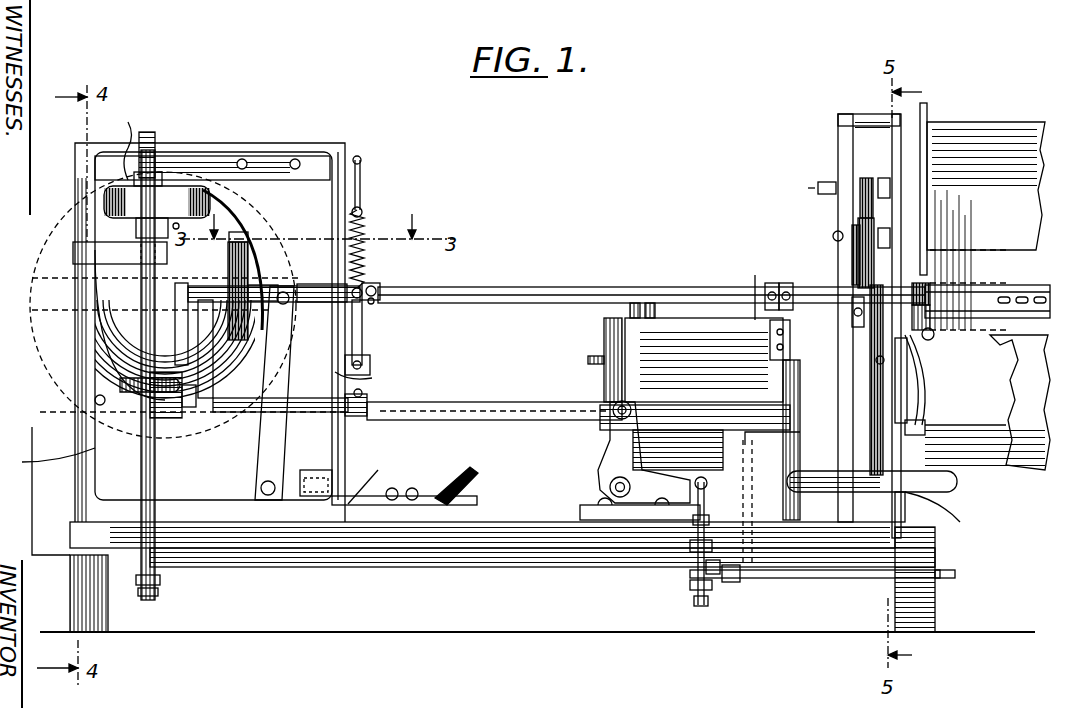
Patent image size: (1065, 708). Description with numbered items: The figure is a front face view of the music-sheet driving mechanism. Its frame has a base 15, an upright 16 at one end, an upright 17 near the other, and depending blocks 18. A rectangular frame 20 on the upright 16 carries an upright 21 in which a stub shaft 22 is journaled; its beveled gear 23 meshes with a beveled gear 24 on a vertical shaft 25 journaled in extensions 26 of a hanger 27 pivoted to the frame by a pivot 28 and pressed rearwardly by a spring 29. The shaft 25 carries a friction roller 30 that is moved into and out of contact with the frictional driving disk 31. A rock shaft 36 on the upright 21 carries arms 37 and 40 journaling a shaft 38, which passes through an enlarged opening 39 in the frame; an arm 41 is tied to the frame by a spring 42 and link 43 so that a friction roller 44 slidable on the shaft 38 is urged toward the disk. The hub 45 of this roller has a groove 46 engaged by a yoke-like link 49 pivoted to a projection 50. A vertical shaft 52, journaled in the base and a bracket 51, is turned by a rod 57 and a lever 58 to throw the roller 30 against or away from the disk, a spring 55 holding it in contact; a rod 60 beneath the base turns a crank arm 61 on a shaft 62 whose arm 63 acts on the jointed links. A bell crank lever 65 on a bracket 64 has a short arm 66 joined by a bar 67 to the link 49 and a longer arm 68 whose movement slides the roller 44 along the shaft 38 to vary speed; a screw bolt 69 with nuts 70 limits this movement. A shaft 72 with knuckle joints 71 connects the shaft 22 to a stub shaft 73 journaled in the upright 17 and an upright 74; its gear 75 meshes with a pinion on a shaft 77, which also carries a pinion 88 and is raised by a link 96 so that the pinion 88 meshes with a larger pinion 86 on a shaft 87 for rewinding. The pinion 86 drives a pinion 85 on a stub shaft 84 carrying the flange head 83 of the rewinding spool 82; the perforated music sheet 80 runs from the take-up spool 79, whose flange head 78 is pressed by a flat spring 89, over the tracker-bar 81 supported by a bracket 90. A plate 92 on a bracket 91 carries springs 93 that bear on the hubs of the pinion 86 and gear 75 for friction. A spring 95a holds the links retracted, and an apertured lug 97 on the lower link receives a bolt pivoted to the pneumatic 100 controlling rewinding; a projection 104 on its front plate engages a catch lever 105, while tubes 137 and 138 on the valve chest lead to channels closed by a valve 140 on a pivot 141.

The base 15 is at (505, 562).
The upright 16 is at (35, 395).
The upright 17 is at (836, 136).
The depending legs or blocks 18 is at (80, 555).
The rectangular frame 20 is at (310, 141).
The upright 21 is at (225, 425).
The stub shaft 22 is at (262, 430).
The beveled gear 23 is at (165, 425).
The beveled gear 24 is at (120, 385).
The vertical shaft 25 is at (120, 365).
The extensions 26 is at (67, 288).
The hanger 27 is at (100, 352).
The pivot 28 is at (96, 400).
The spring 29 is at (170, 156).
The friction roller 30 is at (203, 188).
The frictional driving disk 31 is at (230, 205).
The rock shaft 36 is at (372, 378).
The arm 37 is at (183, 283).
The shaft 38 is at (212, 286).
The enlarged opening 39 is at (366, 284).
The arm 40 is at (362, 320).
The arm 41 is at (370, 362).
The spring 42 is at (364, 212).
The link 43 is at (362, 176).
The friction roller 44 is at (250, 290).
The hub 45 is at (270, 288).
The groove 46 is at (305, 284).
The link 49 is at (290, 430).
The projection 50 is at (328, 476).
The bracket 51 is at (78, 252).
The shaft 52 is at (140, 295).
The spring 55 is at (155, 142).
The rod 57 is at (370, 480).
The lever 58 is at (438, 498).
The rod 60 is at (440, 562).
The crank arm 61 is at (735, 580).
The shaft 62 is at (752, 520).
The arm 63 is at (790, 520).
The bracket 64 is at (600, 515).
The bell crank lever 65 is at (606, 470).
The short arm 66 is at (612, 405).
The bar 67 is at (360, 440).
The longer arm 68 is at (960, 522).
The screw bolt 69 is at (680, 575).
The nuts 70 is at (706, 575).
The knuckle or ball joint 71 is at (372, 304).
The shaft 72 is at (400, 430).
The stub shaft 73 is at (925, 430).
The upright 74 is at (890, 158).
The gear 75 is at (908, 360).
The shaft 77 is at (552, 275).
The flange head 78 is at (922, 410).
The take-up spool 79 is at (1010, 480).
The perforated music sheet 80 is at (1012, 350).
The tracker-bar 81 is at (1048, 288).
The supply or rewinding spool 82 is at (995, 135).
The flange head 83 is at (918, 173).
The stub shaft 84 is at (815, 188).
The pinion 85 is at (862, 196).
The larger pinion 86 is at (860, 214).
The shaft 87 is at (833, 236).
The pinion 88 is at (848, 300).
The flat spring 89 is at (885, 362).
The bracket 90 is at (930, 290).
The bracket 91 is at (930, 312).
The plate 92 is at (934, 334).
The spring 93 is at (852, 252).
The spring 95a is at (818, 520).
The link 96 is at (775, 272).
The apertured lug 97 is at (765, 470).
The pneumatic 100 is at (678, 318).
The projection 104 is at (760, 295).
The catch lever 105 is at (780, 283).
The tube 137 is at (590, 300).
The tube 138 is at (650, 300).
The valve 140 is at (604, 340).
The pivot 141 is at (596, 362).